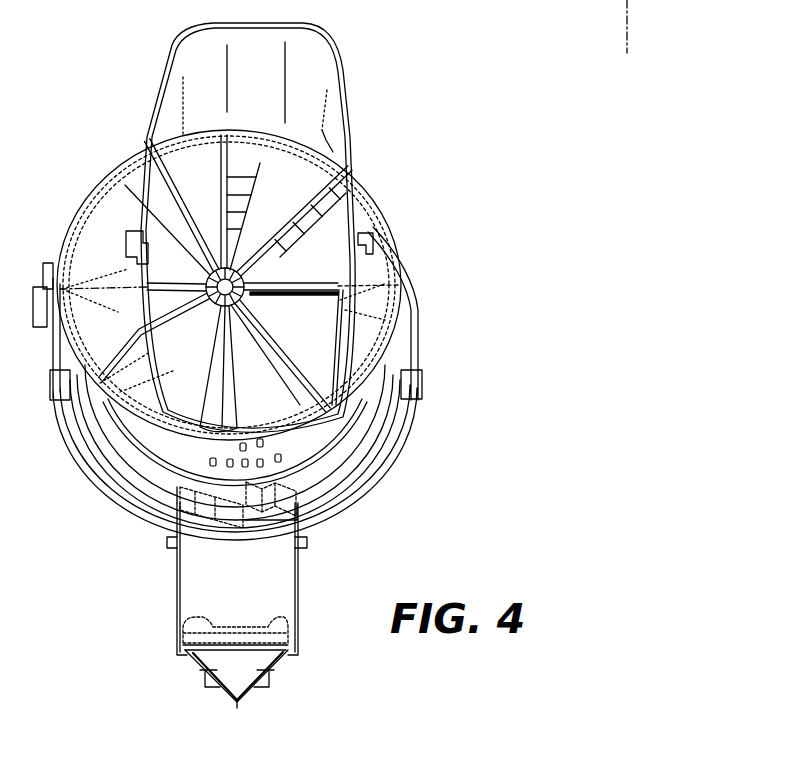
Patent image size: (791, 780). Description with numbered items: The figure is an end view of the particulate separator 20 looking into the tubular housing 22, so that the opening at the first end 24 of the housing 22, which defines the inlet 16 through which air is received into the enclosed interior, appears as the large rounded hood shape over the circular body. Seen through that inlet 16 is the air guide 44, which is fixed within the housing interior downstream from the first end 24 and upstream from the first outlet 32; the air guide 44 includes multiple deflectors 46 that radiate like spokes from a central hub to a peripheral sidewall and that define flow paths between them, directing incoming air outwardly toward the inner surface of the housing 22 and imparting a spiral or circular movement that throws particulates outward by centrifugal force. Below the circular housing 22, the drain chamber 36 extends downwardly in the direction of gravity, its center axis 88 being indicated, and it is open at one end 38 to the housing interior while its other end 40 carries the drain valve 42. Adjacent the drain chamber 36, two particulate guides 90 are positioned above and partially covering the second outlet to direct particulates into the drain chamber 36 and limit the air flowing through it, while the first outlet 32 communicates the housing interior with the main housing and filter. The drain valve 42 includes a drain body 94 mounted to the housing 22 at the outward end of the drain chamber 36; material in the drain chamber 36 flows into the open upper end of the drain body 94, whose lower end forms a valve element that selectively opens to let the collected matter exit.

The inlet 16 is at (313, 72).
The first end 24 is at (350, 78).
The deflectors 46 is at (273, 182).
The air guide 44 is at (315, 175).
The particulate separator 20 is at (468, 158).
The center axis 88 is at (627, 28).
The drain valve 42 is at (285, 686).
The housing 22 is at (390, 398).
The particulate guides 90 is at (261, 499).
The first outlet 32 is at (262, 530).
The one end 38 is at (214, 548).
The drain chamber 36 is at (273, 578).
The other end 40 is at (205, 640).
The drain body 94 is at (263, 654).